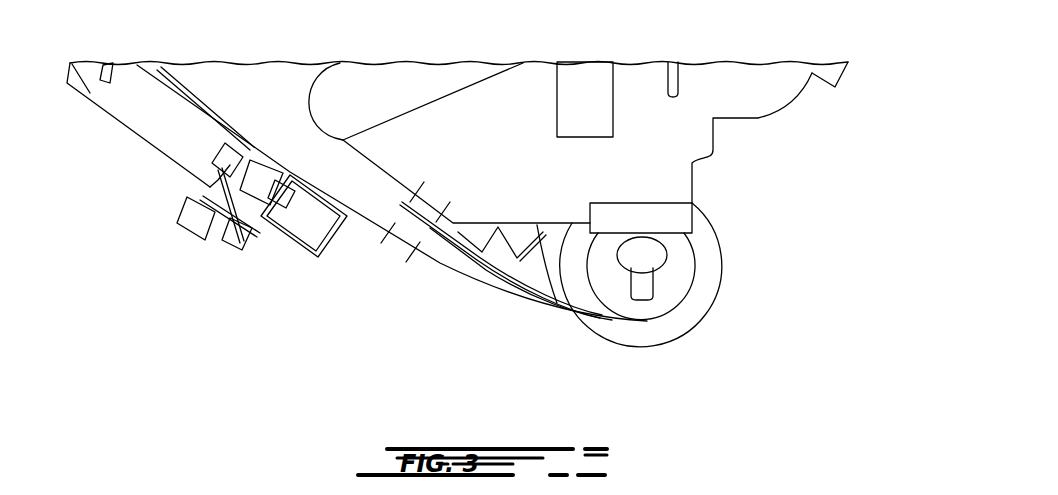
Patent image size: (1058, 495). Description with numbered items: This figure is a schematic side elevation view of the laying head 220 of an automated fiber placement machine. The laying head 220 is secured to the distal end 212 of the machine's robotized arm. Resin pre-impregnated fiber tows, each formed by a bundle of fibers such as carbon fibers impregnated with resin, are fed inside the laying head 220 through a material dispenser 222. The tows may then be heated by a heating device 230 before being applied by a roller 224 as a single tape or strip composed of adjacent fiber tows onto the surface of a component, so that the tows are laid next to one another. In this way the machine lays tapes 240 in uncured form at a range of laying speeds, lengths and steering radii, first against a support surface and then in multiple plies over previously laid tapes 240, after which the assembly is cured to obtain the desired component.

The distal end 212 is at (543, 58).
The laying head 220 is at (788, 188).
The material dispenser 222 is at (481, 304).
The roller 224 is at (655, 323).
The heating device 230 is at (338, 262).
The tape 240 is at (452, 272).